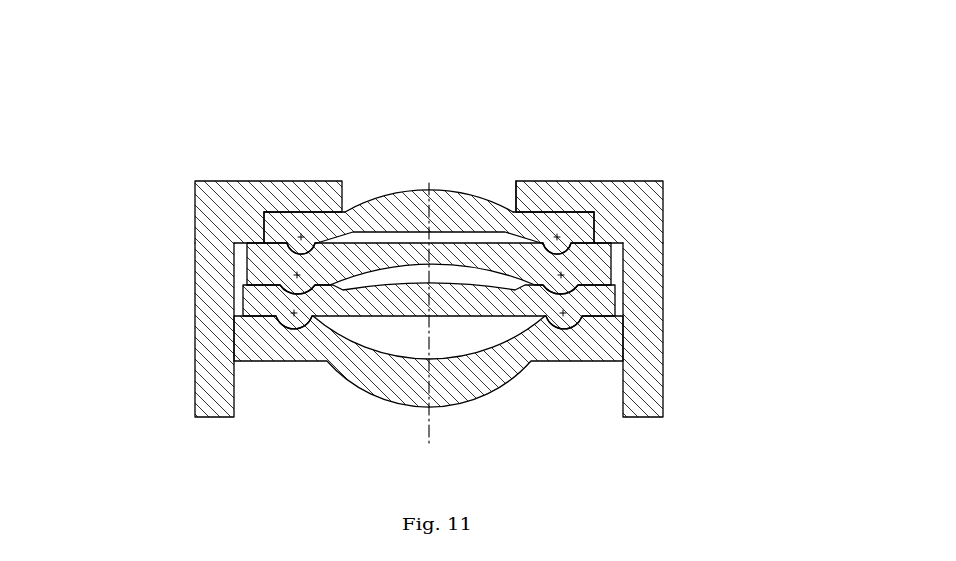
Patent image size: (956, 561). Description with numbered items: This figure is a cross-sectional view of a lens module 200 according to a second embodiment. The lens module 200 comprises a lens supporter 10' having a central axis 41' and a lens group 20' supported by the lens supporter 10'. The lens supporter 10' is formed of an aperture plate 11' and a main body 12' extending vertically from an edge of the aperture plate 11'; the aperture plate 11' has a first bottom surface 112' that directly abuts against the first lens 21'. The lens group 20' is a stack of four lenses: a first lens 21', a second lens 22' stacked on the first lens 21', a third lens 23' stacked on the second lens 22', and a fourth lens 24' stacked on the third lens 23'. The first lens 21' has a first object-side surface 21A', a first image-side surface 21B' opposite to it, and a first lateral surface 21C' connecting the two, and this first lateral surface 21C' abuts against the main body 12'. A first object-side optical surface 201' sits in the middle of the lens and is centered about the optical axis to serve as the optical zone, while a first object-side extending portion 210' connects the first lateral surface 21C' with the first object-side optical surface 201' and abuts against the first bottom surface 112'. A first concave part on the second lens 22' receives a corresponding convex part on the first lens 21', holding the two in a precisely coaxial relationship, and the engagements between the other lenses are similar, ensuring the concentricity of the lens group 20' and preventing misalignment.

The lens module 200 is at (440, 53).
The lens supporter 10' is at (493, 281).
The aperture plate 11' is at (472, 200).
The main body 12' is at (471, 313).
The first bottom surface 112' is at (506, 178).
The lens group 20' is at (406, 243).
The first lens 21' is at (432, 193).
The first object-side surface 21A' is at (429, 146).
The first object-side extending portion 210' is at (304, 173).
The first object-side optical surface 201' is at (429, 172).
The first image-side surface 21B' is at (507, 269).
The first lateral surface 21C' is at (454, 194).
The second lens 22' is at (363, 268).
The third lens 23' is at (365, 306).
The fourth lens 24' is at (369, 361).
The central axis 41' is at (461, 330).